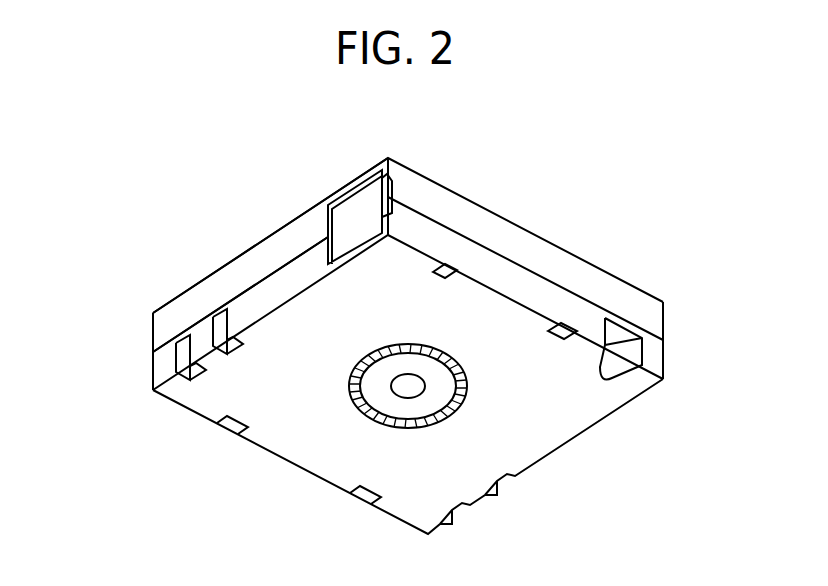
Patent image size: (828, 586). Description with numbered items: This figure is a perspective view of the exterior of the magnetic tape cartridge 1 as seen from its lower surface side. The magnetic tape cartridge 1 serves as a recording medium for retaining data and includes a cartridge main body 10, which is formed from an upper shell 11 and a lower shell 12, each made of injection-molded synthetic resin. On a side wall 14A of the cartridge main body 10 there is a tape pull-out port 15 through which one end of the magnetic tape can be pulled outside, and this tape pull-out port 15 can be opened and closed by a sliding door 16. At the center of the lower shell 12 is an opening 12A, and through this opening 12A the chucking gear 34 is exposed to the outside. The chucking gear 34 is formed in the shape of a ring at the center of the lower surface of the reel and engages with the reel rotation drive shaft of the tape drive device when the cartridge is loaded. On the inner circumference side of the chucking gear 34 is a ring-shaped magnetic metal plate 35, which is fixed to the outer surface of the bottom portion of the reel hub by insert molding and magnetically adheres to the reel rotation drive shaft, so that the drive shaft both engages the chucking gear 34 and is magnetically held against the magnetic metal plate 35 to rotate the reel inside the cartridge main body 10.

The magnetic tape cartridge 1 is at (181, 180).
The cartridge main body 10 is at (630, 262).
The upper shell 11 is at (153, 343).
The lower shell 12 is at (265, 433).
The opening 12A is at (464, 396).
The side wall 14A is at (297, 230).
The tape pull-out port 15 is at (347, 190).
The sliding door 16 is at (360, 208).
The chucking gear 34 is at (384, 419).
The magnetic metal plate 35 is at (440, 382).